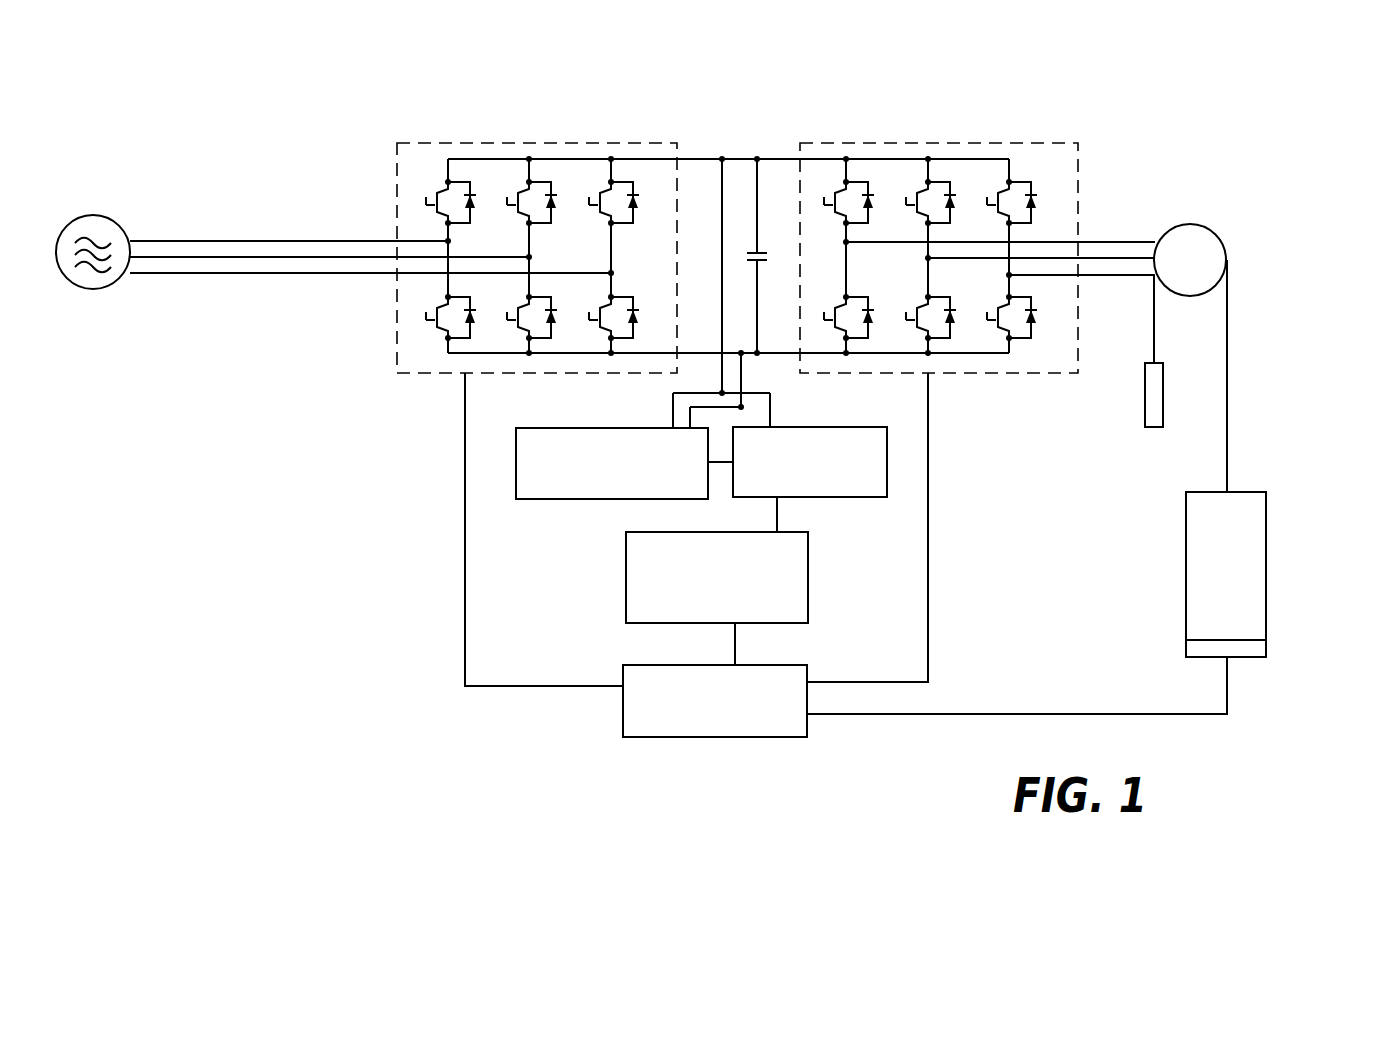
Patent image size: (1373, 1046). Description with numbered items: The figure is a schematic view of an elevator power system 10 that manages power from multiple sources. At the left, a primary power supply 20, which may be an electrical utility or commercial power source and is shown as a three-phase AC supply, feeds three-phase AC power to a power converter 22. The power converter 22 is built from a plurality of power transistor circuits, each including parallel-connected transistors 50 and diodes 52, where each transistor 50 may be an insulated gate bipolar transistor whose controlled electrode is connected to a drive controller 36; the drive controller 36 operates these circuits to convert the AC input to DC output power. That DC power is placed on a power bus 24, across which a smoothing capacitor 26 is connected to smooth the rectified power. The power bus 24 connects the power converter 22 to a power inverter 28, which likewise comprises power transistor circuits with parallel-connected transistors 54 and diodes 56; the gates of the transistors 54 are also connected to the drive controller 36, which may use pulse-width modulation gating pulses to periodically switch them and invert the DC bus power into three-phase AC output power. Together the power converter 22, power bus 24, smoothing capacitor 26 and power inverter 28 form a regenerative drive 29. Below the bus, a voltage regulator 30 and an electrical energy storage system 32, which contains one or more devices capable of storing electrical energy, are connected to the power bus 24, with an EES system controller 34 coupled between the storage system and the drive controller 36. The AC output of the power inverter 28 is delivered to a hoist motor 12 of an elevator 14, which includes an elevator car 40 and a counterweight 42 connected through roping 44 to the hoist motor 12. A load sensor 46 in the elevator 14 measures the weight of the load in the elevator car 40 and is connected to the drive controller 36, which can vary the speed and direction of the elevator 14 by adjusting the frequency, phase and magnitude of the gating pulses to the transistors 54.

The power system 10 is at (386, 96).
The hoist motor 12 is at (1203, 248).
The elevator 14 is at (1257, 338).
The primary power supply 20 is at (72, 222).
The power converter 22 is at (565, 143).
The power bus 24 is at (700, 157).
The smoothing capacitor 26 is at (770, 238).
The power inverter 28 is at (1005, 143).
The regenerative drive 29 is at (800, 102).
The voltage regulator 30 is at (545, 500).
The electrical energy storage (EES) system 32 is at (852, 498).
The EES system controller 34 is at (808, 575).
The drive controller 36 is at (735, 737).
The elevator car 40 is at (1266, 555).
The counterweight 42 is at (1145, 403).
The roping 44 is at (1227, 398).
The load sensor 46 is at (1266, 647).
The transistors 50 is at (520, 190).
The diodes 52 is at (477, 318).
The transistors 54 is at (918, 190).
The diodes 56 is at (950, 318).